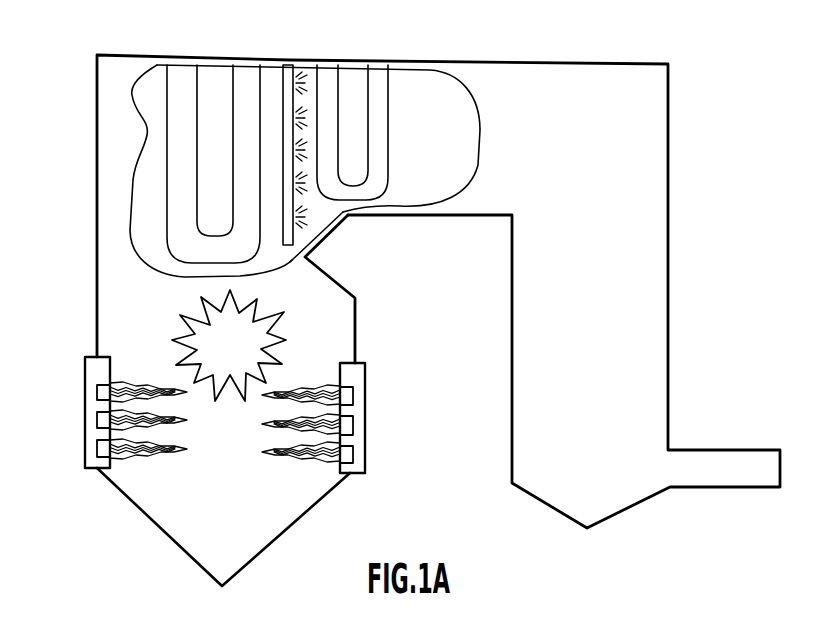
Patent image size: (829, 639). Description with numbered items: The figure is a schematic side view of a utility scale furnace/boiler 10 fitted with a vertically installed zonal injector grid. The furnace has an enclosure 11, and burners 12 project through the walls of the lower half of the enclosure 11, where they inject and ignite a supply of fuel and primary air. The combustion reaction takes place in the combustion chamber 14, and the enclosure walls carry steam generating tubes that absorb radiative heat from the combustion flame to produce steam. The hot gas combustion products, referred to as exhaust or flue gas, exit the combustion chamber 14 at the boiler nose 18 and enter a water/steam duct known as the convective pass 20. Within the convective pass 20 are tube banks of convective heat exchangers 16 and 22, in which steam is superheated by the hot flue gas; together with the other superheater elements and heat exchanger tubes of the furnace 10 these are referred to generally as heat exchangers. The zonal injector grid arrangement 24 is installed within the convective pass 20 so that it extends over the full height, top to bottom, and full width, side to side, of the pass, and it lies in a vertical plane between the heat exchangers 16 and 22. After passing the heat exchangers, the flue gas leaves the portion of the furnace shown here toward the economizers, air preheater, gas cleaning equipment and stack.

The furnace/boiler 10 is at (97, 292).
The enclosure 11 is at (355, 331).
The burners 12 is at (85, 398).
The combustion chamber 14 is at (239, 355).
The convective heat exchanger 16 is at (167, 165).
The boiler nose 18 is at (330, 235).
The convective pass 20 is at (444, 158).
The convective heat exchanger 22 is at (392, 86).
The zonal injector grid arrangement 24 is at (283, 97).